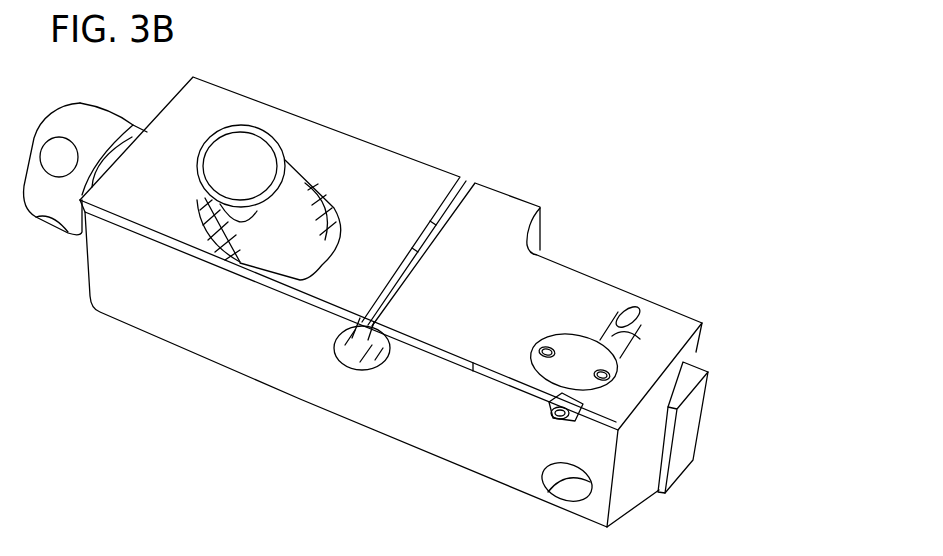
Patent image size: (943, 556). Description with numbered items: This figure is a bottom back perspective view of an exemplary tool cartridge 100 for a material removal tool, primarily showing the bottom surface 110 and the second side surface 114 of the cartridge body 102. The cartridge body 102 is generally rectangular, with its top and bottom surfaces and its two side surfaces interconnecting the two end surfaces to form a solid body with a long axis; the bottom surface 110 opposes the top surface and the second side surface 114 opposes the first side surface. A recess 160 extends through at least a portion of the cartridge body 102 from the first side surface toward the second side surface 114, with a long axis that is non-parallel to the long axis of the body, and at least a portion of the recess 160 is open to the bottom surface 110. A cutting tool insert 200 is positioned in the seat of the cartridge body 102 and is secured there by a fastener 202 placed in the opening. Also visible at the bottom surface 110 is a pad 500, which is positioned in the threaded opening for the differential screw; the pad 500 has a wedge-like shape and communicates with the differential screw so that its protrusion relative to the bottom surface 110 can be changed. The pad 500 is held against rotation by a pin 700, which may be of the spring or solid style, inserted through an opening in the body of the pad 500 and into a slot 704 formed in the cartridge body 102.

The tool cartridge 100 is at (110, 370).
The cartridge body 102 is at (483, 304).
The bottom surface 110 is at (397, 185).
The second side surface 114 is at (241, 350).
The recess 160 is at (358, 352).
The cutting tool insert 200 is at (686, 428).
The fastener 202 is at (567, 506).
The pad 500 is at (573, 355).
The pin 700 is at (553, 418).
The slot 704 is at (627, 320).